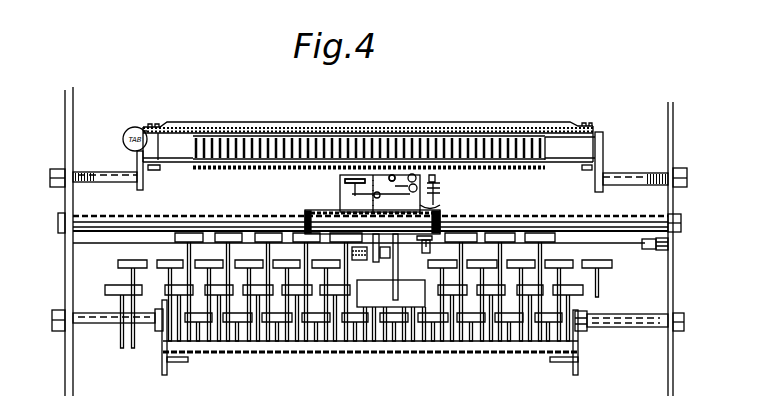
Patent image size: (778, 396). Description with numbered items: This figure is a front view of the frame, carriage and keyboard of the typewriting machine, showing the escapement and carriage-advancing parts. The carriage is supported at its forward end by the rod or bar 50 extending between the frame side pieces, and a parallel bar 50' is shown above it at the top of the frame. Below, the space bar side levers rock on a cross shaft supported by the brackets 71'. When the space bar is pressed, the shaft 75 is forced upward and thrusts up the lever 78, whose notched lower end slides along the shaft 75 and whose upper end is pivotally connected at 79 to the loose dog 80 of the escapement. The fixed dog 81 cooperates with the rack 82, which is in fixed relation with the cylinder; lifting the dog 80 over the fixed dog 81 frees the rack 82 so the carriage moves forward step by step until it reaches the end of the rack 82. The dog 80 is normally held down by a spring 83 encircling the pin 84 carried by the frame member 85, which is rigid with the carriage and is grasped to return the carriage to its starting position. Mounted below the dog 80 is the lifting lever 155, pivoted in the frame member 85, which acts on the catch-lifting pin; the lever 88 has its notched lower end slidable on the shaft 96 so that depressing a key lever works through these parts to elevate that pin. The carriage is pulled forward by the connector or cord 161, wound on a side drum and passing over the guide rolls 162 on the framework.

The upper carriage shaft 50' is at (368, 161).
The rod or bar 50 is at (369, 212).
The brackets 71' is at (368, 334).
The shaft 75 is at (373, 303).
The lever 78 is at (398, 250).
The pivot 79 is at (398, 178).
The loose dog 80 is at (383, 180).
The fixed dog 81 is at (366, 176).
The rack 82 is at (478, 166).
The spring 83 is at (438, 189).
The pin 84 is at (430, 200).
The frame member 85 is at (440, 216).
The lever 88 is at (420, 240).
The shaft 96 is at (360, 258).
The lifting lever 155 is at (430, 196).
The connector or cord 161 is at (612, 244).
The guide rolls 162 is at (648, 250).